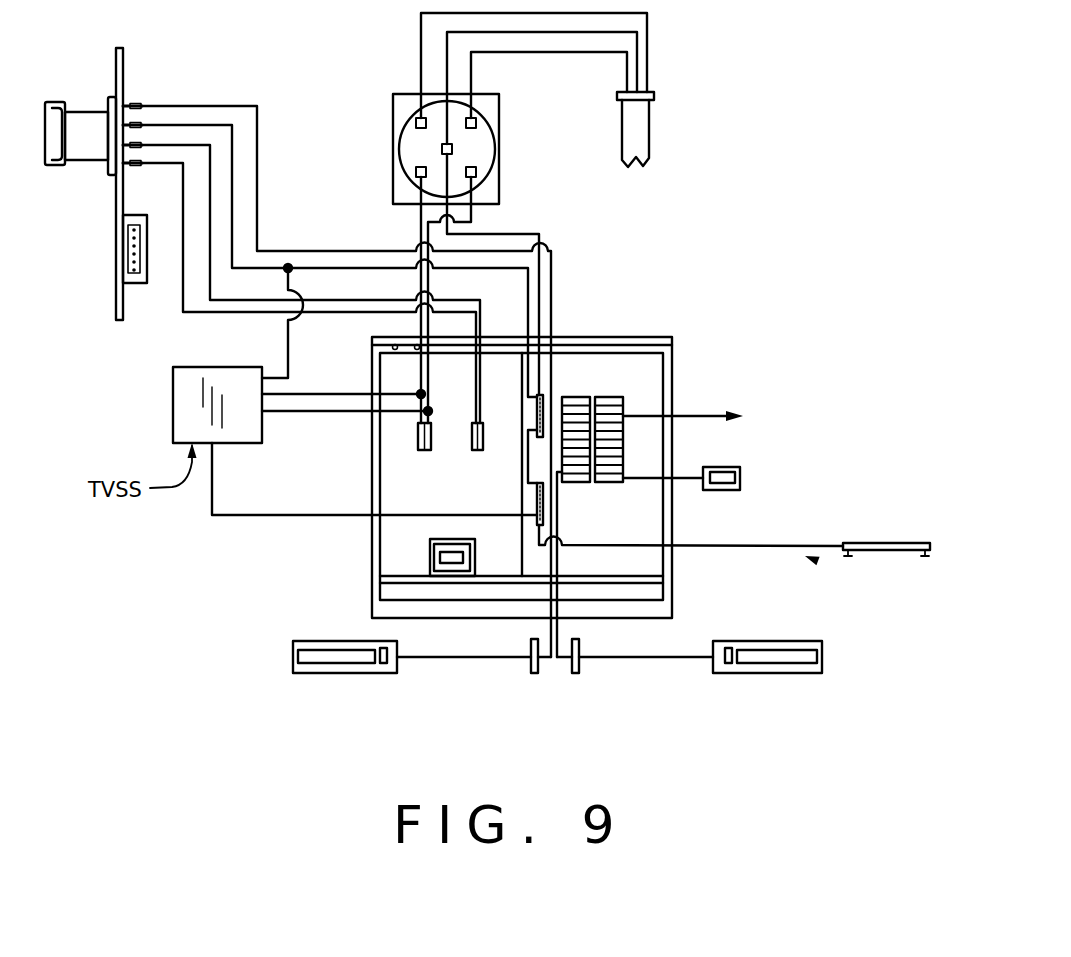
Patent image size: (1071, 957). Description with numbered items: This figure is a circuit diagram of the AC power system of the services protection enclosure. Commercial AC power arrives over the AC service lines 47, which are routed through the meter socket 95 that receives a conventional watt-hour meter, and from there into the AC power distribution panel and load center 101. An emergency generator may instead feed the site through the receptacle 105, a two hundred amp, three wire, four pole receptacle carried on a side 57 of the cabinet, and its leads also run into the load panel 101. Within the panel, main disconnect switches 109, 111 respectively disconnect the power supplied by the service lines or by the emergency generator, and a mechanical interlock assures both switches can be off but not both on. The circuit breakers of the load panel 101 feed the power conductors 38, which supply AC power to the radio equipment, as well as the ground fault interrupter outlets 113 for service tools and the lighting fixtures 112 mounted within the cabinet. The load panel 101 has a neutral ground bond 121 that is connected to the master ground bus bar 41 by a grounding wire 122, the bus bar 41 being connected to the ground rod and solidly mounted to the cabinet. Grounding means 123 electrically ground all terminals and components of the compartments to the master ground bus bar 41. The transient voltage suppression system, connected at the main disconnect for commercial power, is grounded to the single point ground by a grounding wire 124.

The receptacle 105 is at (86, 112).
The side 57 is at (113, 292).
The meter socket 95 is at (499, 147).
The AC service lines 47 is at (652, 122).
The AC power distribution panel and load center 101 is at (681, 327).
The neutral ground bond 121 is at (552, 449).
The power conductors 38 is at (698, 416).
The ground fault interrupter outlets 113 is at (720, 467).
The grounding wire 122 is at (712, 547).
The master ground bus bar 41 is at (875, 540).
The grounding means 123 is at (810, 558).
The main disconnect switch 111 is at (418, 437).
The main disconnect switch 109 is at (472, 440).
The grounding wire 124 is at (253, 515).
The lighting fixtures 112 is at (317, 641).